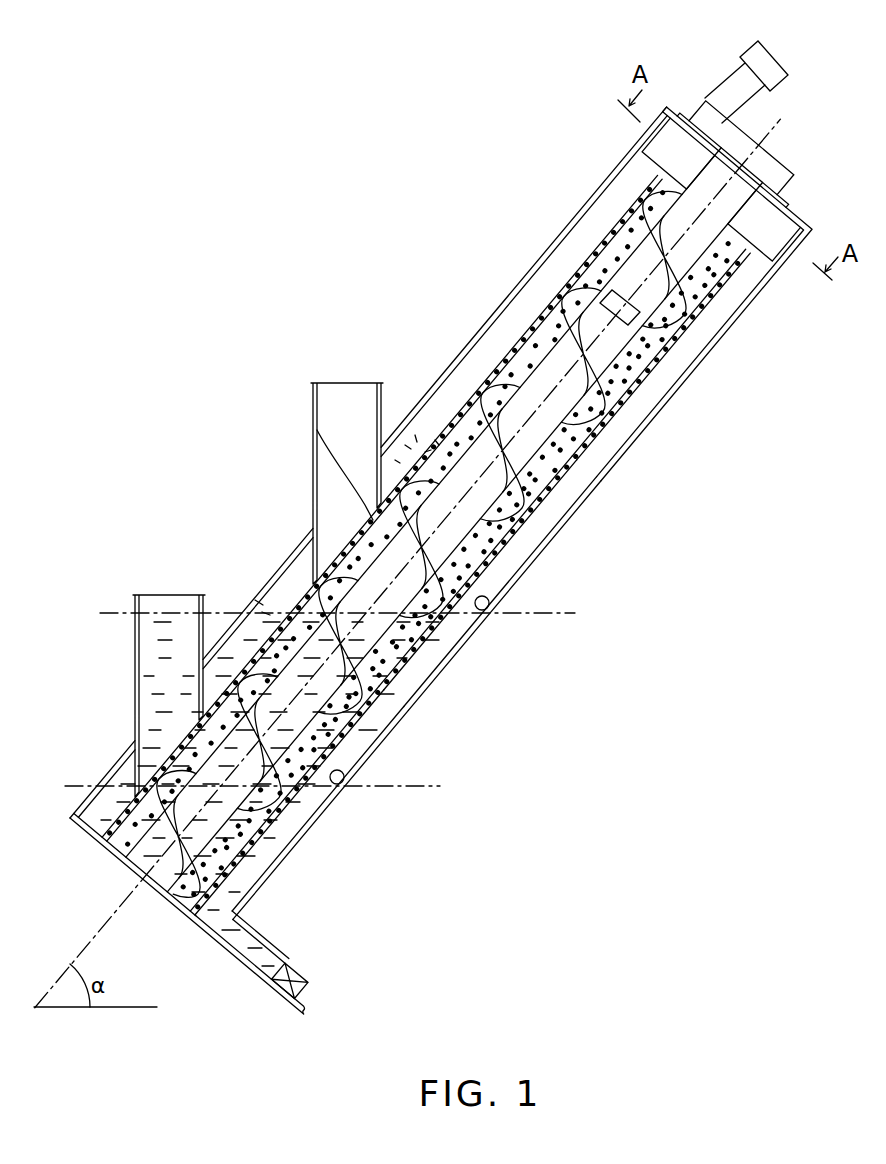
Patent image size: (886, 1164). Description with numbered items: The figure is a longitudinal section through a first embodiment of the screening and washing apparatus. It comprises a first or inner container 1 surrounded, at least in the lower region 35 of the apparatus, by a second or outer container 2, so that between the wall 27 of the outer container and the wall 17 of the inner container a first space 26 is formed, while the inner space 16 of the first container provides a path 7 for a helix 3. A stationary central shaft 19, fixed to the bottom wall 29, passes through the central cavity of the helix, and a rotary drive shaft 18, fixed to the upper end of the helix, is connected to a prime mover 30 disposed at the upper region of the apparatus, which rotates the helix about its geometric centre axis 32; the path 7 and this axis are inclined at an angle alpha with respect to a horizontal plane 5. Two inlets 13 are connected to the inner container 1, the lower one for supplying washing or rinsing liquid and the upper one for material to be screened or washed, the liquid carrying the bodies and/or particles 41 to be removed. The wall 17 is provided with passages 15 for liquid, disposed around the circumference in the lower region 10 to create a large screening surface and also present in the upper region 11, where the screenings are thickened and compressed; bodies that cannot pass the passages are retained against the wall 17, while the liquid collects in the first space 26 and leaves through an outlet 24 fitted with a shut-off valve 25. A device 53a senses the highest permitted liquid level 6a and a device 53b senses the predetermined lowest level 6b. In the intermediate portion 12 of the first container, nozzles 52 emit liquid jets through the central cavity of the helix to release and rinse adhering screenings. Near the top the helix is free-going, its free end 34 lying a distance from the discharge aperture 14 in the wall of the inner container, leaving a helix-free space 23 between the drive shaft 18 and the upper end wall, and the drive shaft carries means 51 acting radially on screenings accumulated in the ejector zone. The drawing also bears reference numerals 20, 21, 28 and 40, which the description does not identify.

The first container 1 is at (605, 240).
The second container 2 is at (414, 400).
The helix 3 is at (443, 662).
The horizontal plane 5 is at (133, 1008).
The highest liquid level 6a is at (556, 612).
The lowest liquid level 6b is at (400, 786).
The path 7 is at (432, 398).
The lower region of the inner container 10 is at (76, 827).
The upper region of the inner container 11 is at (615, 190).
The intermediate portion of the first container 12 is at (378, 385).
The inlet 13 is at (346, 394).
The discharge aperture 14 is at (718, 164).
The passages 15 is at (300, 772).
The inner space of the first container 16 is at (381, 466).
The wall of the inner container 17 is at (512, 358).
The rotary drive shaft 18 is at (671, 337).
The central shaft 19 is at (584, 455).
The side wall 20 is at (132, 779).
The end flange 21 is at (630, 160).
The helix-free space 23 is at (727, 283).
The outlet 24 is at (267, 930).
The shut-off valve 25 is at (300, 962).
The first space 26 is at (270, 617).
The wall of the outer container 27 is at (522, 286).
The lower bearing block 28 is at (755, 232).
The bottom wall 29 is at (168, 905).
The prime mover 30 is at (695, 116).
The geometric centre axis 32 is at (272, 620).
The free end of the helix 34 is at (592, 250).
The lower region of the apparatus 35 is at (347, 802).
The liquid 40 is at (153, 692).
The bodies and/or particles 41 is at (272, 597).
The discharge device 51 is at (795, 229).
The nozzles 52 is at (440, 396).
The device for sensing highest level 53a is at (483, 596).
The device for sensing lowest level 53b is at (343, 770).